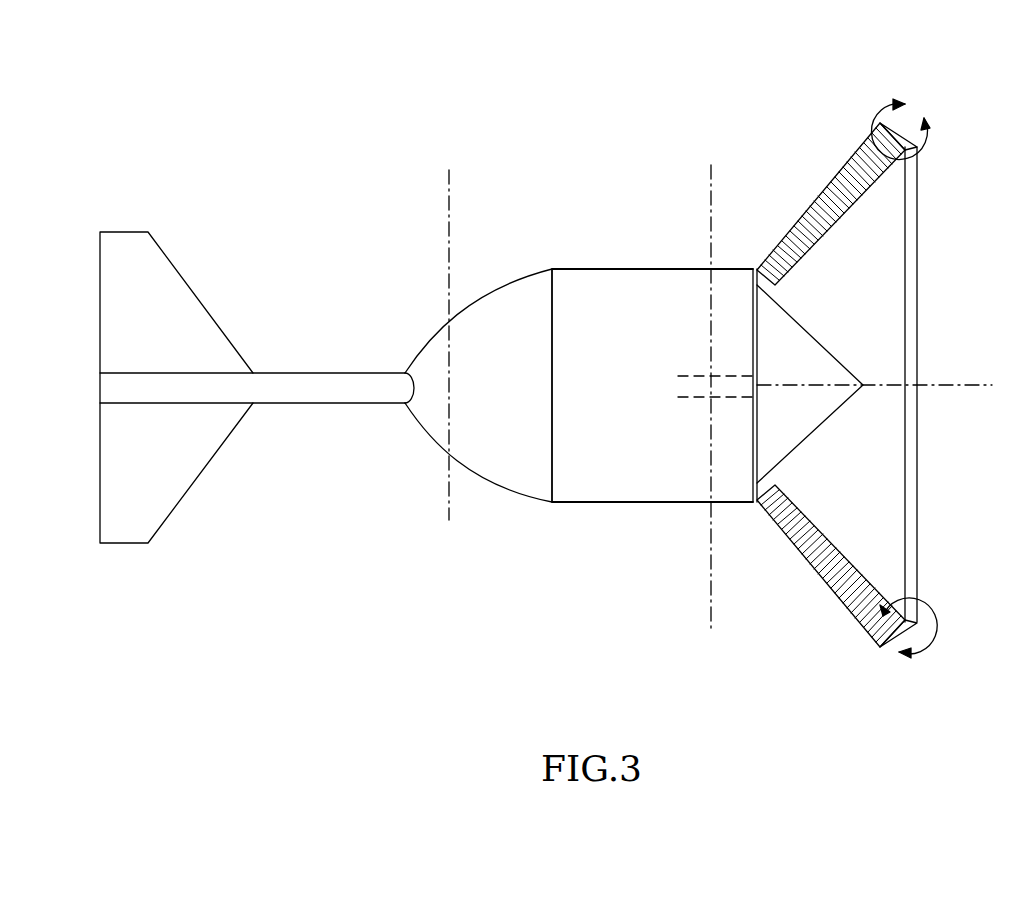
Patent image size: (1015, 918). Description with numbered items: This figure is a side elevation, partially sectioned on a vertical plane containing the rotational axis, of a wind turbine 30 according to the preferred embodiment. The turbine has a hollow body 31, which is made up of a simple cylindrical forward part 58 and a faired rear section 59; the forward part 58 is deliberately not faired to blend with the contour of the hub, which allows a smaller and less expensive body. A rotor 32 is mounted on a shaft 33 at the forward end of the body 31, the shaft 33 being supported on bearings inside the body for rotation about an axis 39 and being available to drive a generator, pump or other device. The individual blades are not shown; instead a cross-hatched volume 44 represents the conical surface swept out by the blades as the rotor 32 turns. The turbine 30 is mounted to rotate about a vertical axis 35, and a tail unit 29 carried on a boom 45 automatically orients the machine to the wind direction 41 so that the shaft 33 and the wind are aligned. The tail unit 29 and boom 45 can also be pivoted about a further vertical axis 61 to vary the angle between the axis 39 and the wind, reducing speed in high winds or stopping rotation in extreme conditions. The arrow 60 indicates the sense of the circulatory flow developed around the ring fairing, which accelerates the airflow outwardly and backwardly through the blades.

The wind turbine 30 is at (561, 122).
The tail unit 29 is at (190, 312).
The boom 45 is at (300, 392).
The faired rear section 59 is at (512, 275).
The cylindrical forward part 58 is at (610, 288).
The vertical axis 61 is at (449, 222).
The vertical axis 35 is at (711, 193).
The axis 39 is at (937, 383).
The shaft 33 is at (732, 398).
The hollow body 31 is at (615, 505).
The volume 44 is at (822, 200).
The rotor 32 is at (918, 540).
The wind direction 41 is at (930, 485).
The arrow 60 is at (920, 152).